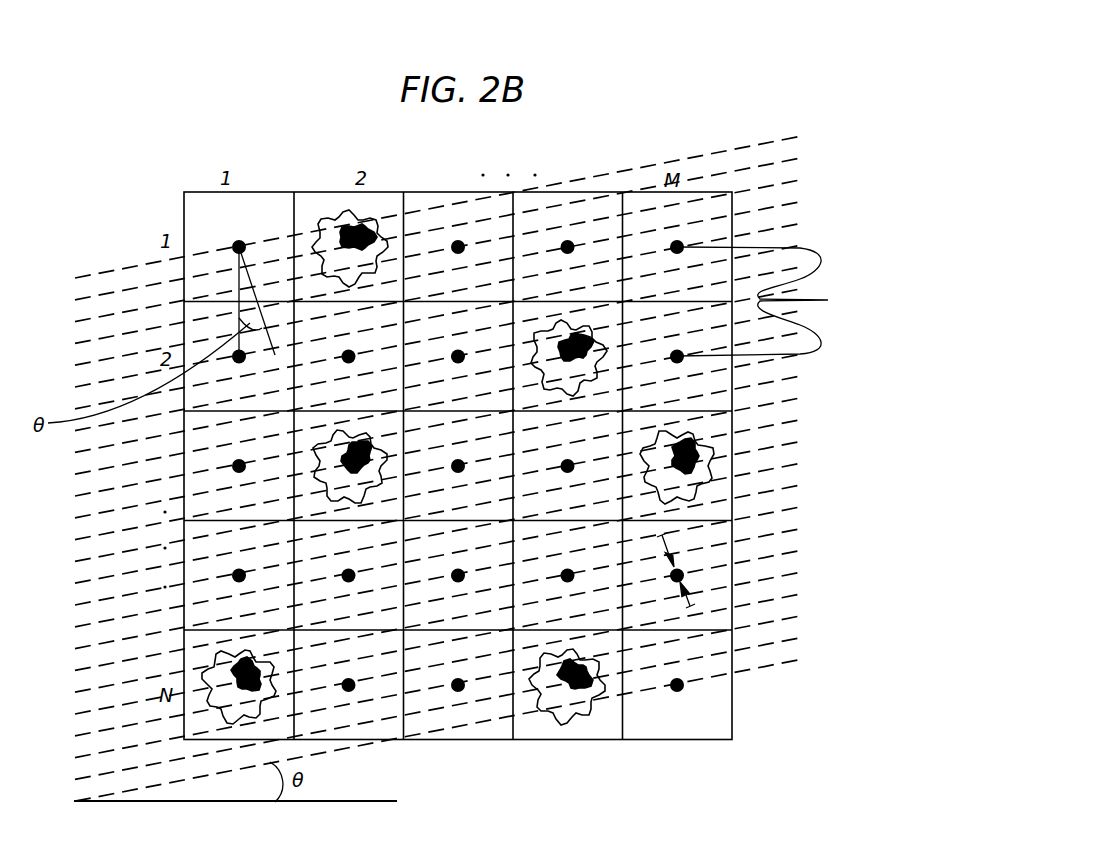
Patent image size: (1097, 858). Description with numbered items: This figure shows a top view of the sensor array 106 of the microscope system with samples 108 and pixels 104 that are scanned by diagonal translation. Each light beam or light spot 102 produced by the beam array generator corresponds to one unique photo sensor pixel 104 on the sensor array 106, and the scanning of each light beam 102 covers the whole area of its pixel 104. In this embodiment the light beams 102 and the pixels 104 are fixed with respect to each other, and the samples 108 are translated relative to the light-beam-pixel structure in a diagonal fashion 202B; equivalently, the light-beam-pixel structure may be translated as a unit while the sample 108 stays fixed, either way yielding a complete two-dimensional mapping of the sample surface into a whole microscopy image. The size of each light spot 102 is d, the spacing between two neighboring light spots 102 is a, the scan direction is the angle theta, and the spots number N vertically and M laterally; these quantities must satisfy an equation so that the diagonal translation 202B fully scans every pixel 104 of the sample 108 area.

The diagonal fashion 202B is at (752, 147).
The light beam 102 is at (677, 357).
The photo sensor pixel 104 is at (596, 720).
The sensor array 106 is at (680, 740).
The sample 108 is at (710, 485).
The spacing between two neighboring light spots a is at (763, 301).
The size of the light spots d is at (688, 600).